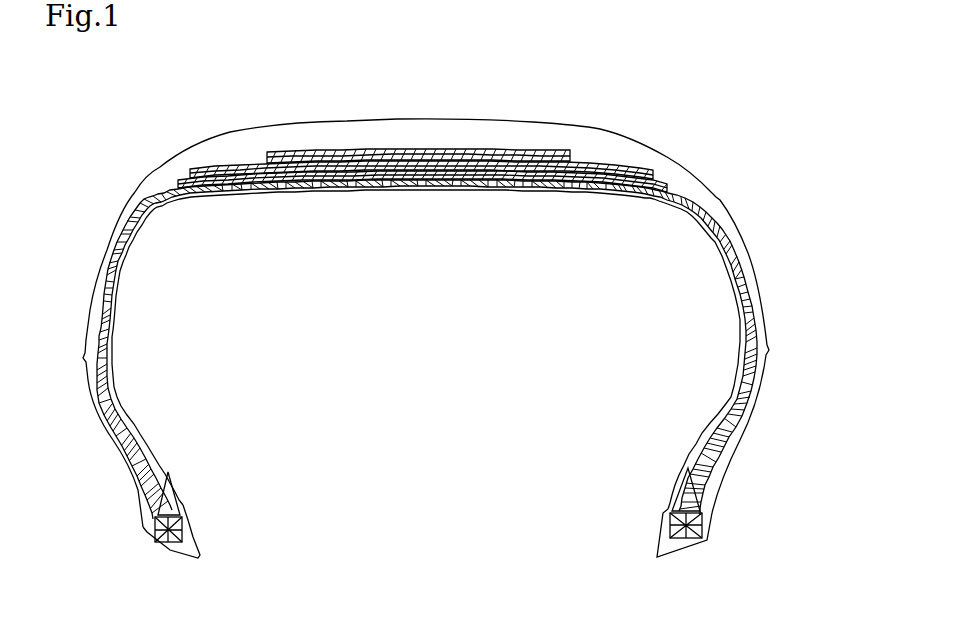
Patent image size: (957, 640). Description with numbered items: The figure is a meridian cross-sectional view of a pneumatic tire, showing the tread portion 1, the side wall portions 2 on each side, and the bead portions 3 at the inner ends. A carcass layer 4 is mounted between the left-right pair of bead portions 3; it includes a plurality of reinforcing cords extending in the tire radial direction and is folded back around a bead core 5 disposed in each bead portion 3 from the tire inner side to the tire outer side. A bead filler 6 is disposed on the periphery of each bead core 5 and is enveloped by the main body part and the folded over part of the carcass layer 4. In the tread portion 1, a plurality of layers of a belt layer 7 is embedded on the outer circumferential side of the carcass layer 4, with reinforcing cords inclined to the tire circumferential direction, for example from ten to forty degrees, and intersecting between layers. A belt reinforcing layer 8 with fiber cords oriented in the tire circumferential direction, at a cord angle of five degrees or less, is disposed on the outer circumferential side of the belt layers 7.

The tread portion 1 is at (531, 120).
The side wall portion 2 is at (92, 391).
The bead portion 3 is at (145, 529).
The carcass layer 4 is at (748, 262).
The bead core 5 is at (200, 545).
The bead filler 6 is at (168, 498).
The belt layer 7 is at (640, 168).
The belt reinforcing layer 8 is at (455, 152).